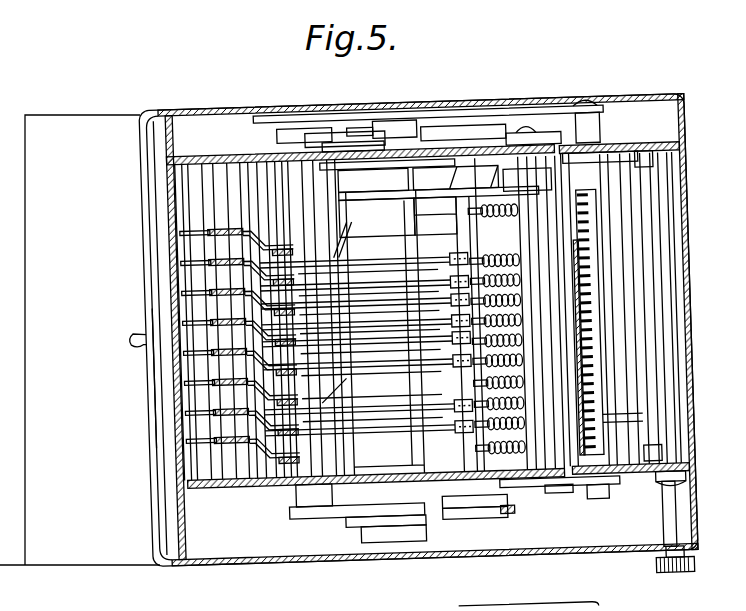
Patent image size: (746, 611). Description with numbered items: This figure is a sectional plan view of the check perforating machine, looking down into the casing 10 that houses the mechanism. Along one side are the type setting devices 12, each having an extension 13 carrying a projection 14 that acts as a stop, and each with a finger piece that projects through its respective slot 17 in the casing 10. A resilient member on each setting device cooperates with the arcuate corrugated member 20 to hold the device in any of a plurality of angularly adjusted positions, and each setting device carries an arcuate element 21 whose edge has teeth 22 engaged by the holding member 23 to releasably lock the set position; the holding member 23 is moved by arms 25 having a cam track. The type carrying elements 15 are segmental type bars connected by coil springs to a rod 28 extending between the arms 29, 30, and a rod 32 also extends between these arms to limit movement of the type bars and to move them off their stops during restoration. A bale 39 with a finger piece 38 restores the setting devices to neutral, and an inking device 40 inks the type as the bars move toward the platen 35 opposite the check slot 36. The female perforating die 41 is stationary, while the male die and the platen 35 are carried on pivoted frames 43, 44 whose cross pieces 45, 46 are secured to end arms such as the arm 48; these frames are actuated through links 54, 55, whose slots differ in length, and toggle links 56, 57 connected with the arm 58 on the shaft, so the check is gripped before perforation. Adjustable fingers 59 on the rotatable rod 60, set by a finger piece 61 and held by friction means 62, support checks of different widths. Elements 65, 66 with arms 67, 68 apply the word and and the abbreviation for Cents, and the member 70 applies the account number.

The casing 10 is at (690, 183).
The type setting devices 12 is at (367, 258).
The extension 13 is at (440, 256).
The projection 14 is at (460, 258).
The type carrying elements 15 is at (392, 270).
The slot 17 is at (182, 284).
The corrugated member 20 is at (215, 165).
The arcuate element 21 is at (342, 254).
The teeth 22 is at (592, 504).
The holding member 23 is at (268, 163).
The arms 25 is at (391, 168).
The rod 28 is at (524, 194).
The arm 29 is at (414, 198).
The arm 30 is at (400, 465).
The rod 32 is at (460, 210).
The platen 35 is at (560, 393).
The slot 36 is at (515, 607).
The finger piece 38 is at (133, 326).
The bale 39 is at (153, 368).
The inking device 40 is at (514, 246).
The female perforating die 41 is at (570, 302).
The pivoted frame 43 is at (628, 153).
The pivoted frame 44 is at (650, 166).
The cross piece 45 is at (625, 222).
The cross piece 46 is at (600, 192).
The arm 48 is at (592, 283).
The link 54 is at (545, 118).
The link 55 is at (472, 148).
The link 56 is at (293, 125).
The link 57 is at (325, 137).
The arm 58 is at (366, 145).
The adjustable fingers 59 is at (648, 263).
The rotatable rod 60 is at (670, 522).
The finger piece 61 is at (687, 572).
The friction means 62 is at (681, 484).
The element for the word and 65 is at (580, 384).
The element for the abbreviation Cents 66 is at (600, 424).
The arm 67 is at (425, 470).
The arm 68 is at (484, 482).
The account number member 70 is at (462, 180).